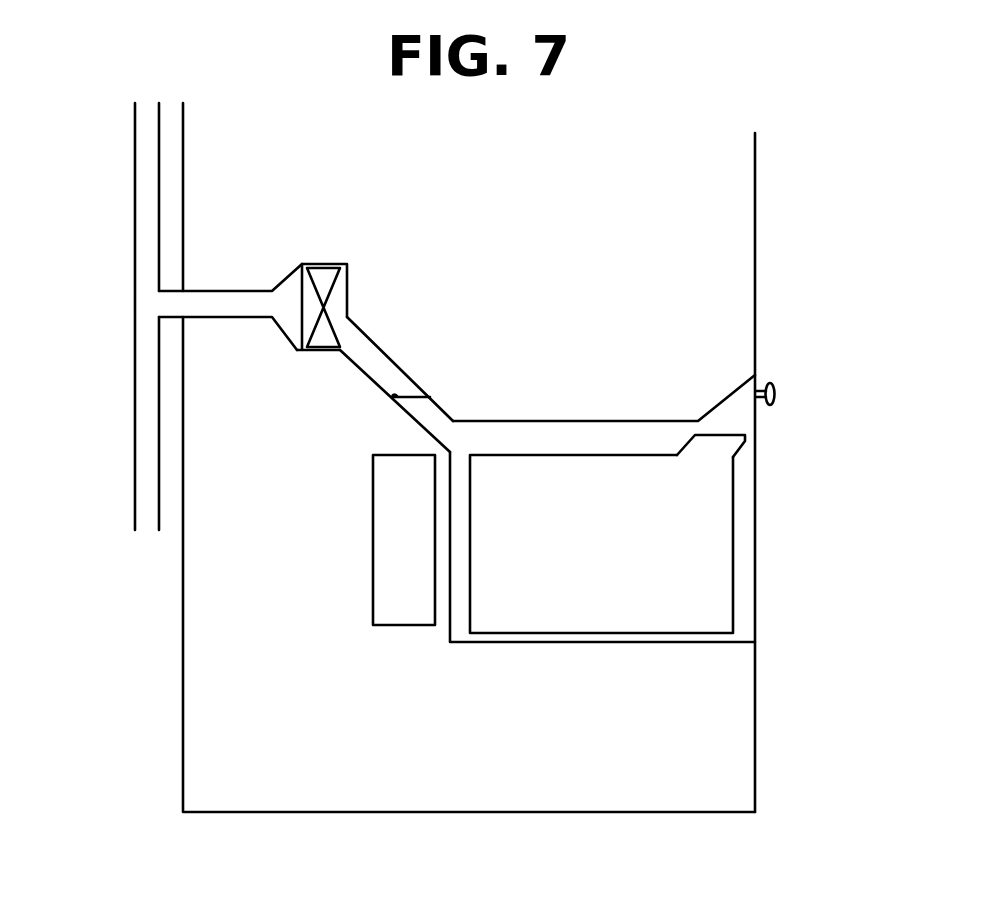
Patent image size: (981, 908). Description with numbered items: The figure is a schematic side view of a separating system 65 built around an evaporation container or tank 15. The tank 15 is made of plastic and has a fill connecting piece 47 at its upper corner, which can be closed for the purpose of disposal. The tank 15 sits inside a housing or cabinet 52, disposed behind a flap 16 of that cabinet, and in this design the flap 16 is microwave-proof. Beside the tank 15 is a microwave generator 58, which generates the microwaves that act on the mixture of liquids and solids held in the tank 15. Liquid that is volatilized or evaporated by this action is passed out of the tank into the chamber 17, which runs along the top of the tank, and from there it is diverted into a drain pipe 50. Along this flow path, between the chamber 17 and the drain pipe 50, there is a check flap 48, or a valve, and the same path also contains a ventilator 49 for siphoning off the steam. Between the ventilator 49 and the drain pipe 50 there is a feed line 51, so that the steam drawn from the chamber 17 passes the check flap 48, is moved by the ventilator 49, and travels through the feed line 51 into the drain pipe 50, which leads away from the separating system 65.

The evaporation container or tank 15 is at (708, 545).
The flap 16 is at (778, 394).
The chamber 17 is at (583, 434).
The fill connecting piece 47 is at (742, 444).
The check flap 48 is at (426, 398).
The ventilator 49 is at (322, 280).
The drain pipe 50 is at (148, 225).
The feed line 51 is at (228, 302).
The housing or cabinet 52 is at (712, 718).
The microwave generator 58 is at (405, 613).
The separating system 65 is at (176, 650).